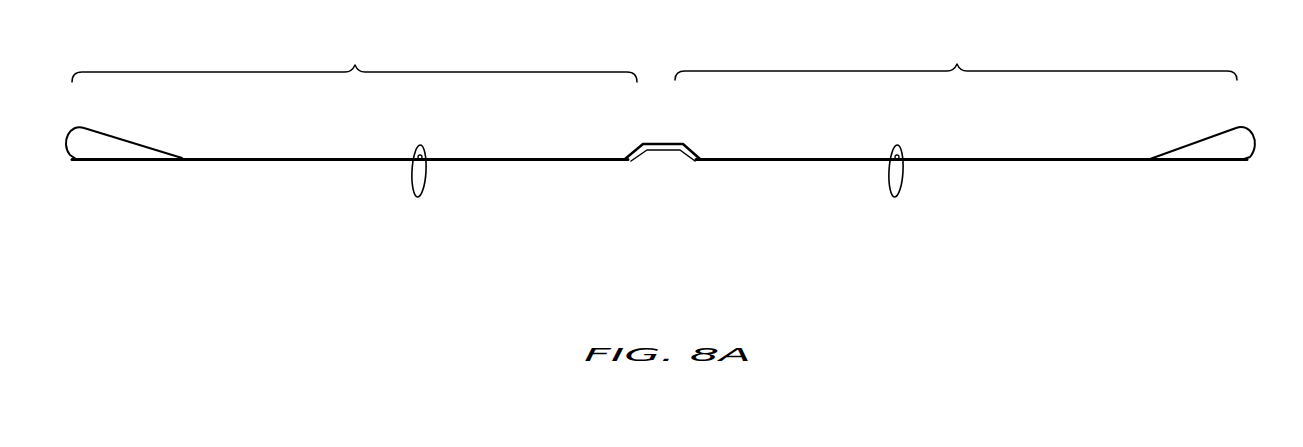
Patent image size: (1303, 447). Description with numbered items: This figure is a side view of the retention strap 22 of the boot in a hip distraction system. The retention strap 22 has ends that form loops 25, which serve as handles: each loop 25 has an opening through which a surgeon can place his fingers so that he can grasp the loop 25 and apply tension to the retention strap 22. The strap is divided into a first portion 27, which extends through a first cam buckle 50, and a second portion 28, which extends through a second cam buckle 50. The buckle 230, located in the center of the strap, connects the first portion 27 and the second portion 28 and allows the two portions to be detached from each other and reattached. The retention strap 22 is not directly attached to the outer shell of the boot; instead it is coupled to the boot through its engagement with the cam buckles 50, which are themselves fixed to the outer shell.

The retention strap 22 is at (306, 161).
The loop 25 is at (78, 160).
The first portion 27 is at (354, 60).
The second portion 28 is at (956, 59).
The cam buckle 50 is at (416, 181).
The buckle 230 is at (656, 146).